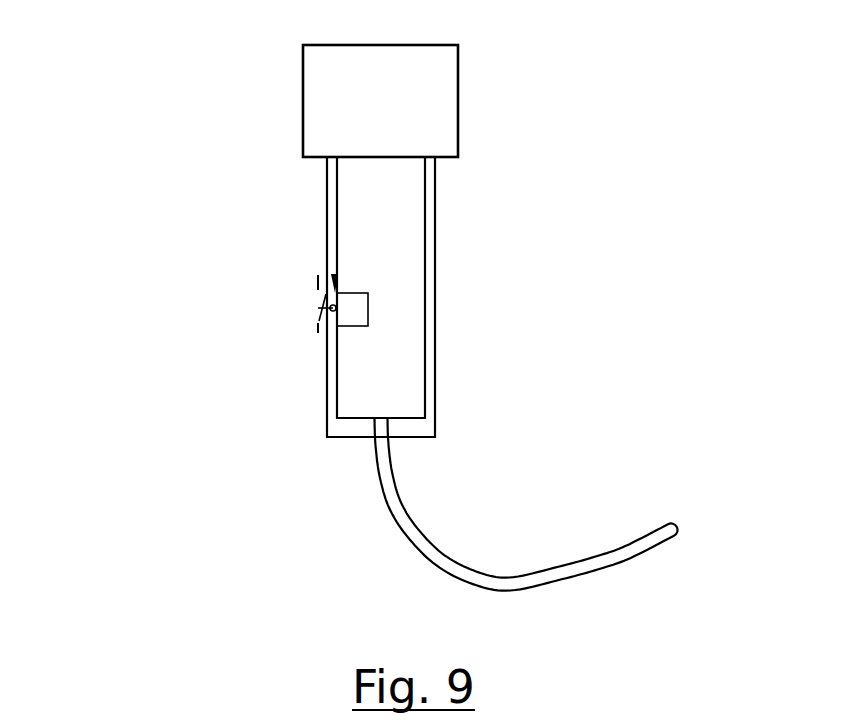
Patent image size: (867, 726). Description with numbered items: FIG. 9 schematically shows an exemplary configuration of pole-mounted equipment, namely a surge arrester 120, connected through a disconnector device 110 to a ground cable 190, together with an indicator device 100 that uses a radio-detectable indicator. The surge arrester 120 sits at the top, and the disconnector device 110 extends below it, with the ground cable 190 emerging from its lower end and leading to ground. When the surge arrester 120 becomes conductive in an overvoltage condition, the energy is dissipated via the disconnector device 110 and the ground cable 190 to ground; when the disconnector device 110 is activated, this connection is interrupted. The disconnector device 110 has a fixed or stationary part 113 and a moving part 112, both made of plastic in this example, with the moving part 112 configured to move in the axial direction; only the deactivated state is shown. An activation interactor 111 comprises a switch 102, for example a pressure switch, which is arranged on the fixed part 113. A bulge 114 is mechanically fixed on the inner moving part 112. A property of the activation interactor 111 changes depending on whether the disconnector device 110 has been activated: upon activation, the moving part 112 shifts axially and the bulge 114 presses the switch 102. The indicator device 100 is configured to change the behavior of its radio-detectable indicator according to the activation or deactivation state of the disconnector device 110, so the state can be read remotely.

The indicator device 100 is at (205, 213).
The switch 102 is at (317, 322).
The disconnector device 110 is at (500, 297).
The activation interactor 111 is at (204, 277).
The moving part 112 is at (425, 265).
The fixed part 113 is at (435, 207).
The bulge 114 is at (333, 276).
The surge arrester 120 is at (460, 100).
The ground cable 190 is at (417, 530).